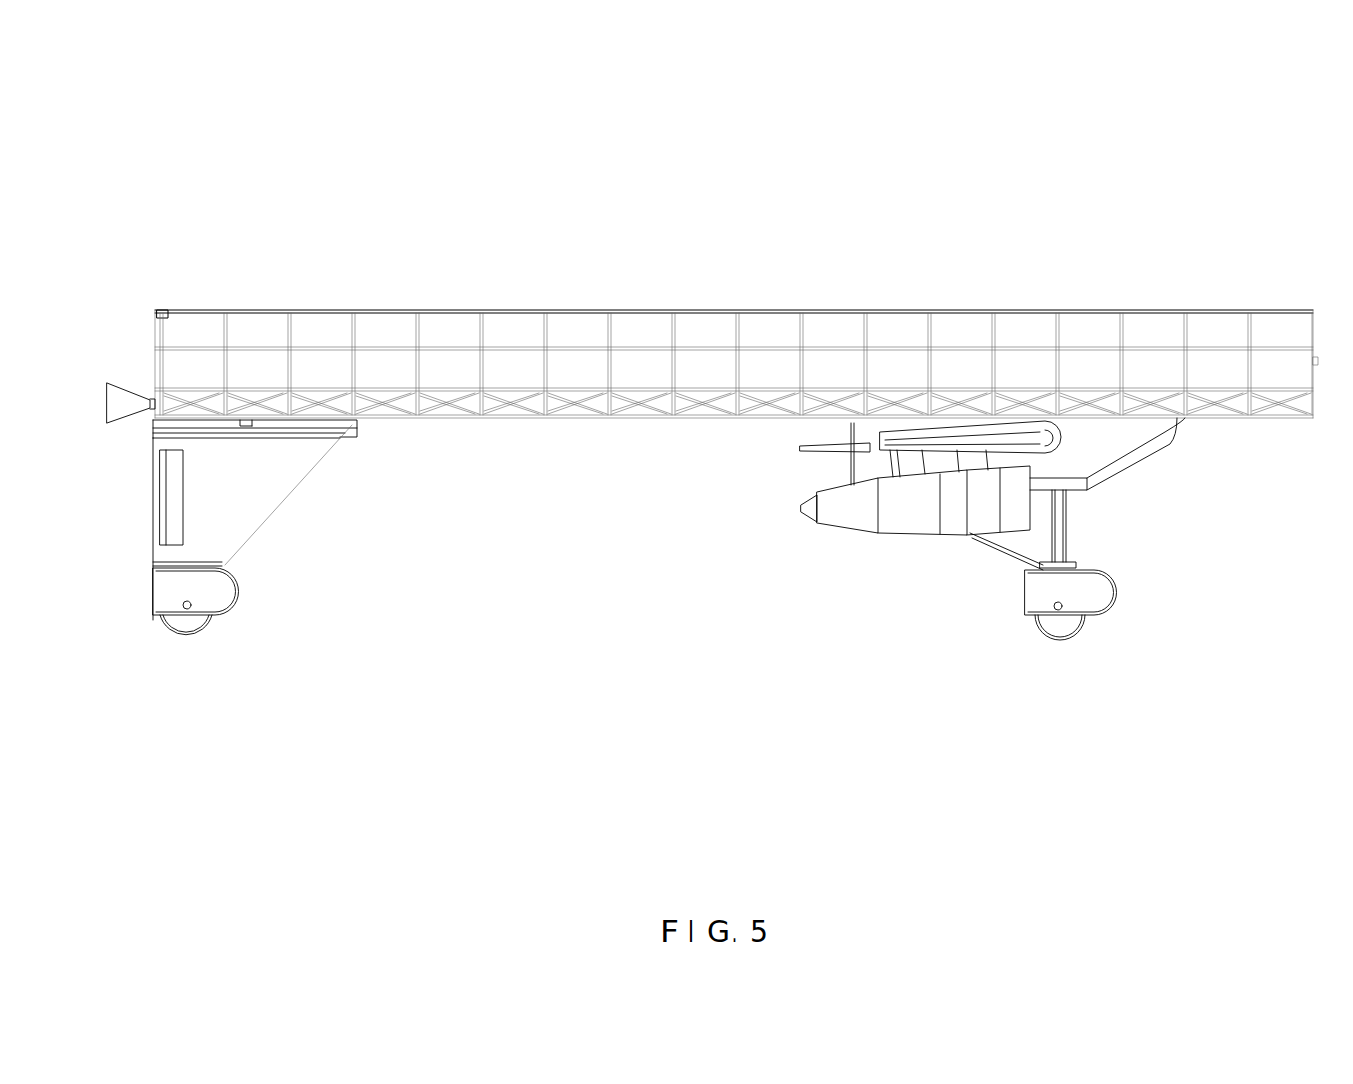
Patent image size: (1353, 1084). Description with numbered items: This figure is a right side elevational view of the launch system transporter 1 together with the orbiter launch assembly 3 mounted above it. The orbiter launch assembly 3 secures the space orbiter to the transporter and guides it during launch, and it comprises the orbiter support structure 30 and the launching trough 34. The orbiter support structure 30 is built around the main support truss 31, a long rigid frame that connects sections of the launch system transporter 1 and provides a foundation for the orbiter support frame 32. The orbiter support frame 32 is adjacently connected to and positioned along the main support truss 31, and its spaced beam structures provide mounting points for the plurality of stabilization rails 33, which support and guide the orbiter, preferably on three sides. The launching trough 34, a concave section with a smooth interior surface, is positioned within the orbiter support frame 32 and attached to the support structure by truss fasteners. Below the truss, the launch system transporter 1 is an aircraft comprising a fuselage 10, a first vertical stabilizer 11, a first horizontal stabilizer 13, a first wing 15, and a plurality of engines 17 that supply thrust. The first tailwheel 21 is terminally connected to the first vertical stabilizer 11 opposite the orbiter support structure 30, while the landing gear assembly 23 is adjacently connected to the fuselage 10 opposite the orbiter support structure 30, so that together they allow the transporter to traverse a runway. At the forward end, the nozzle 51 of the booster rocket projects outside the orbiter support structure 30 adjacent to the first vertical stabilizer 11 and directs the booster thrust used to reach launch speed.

The launch system transporter 1 is at (1249, 507).
The orbiter launch assembly 3 is at (668, 148).
The fuselage 10 is at (1117, 468).
The first vertical stabilizer 11 is at (260, 508).
The first horizontal stabilizer 13 is at (325, 428).
The first wing 15 is at (832, 453).
The plurality of engines 17 is at (905, 520).
The first tailwheel 21 is at (183, 625).
The landing gear assembly 23 is at (1042, 603).
The orbiter support structure 30 is at (708, 365).
The main support truss 31 is at (482, 415).
The orbiter support frame 32 is at (865, 328).
The plurality of stabilization rails 33 is at (590, 310).
The launching trough 34 is at (633, 373).
The nozzle 51 is at (122, 415).